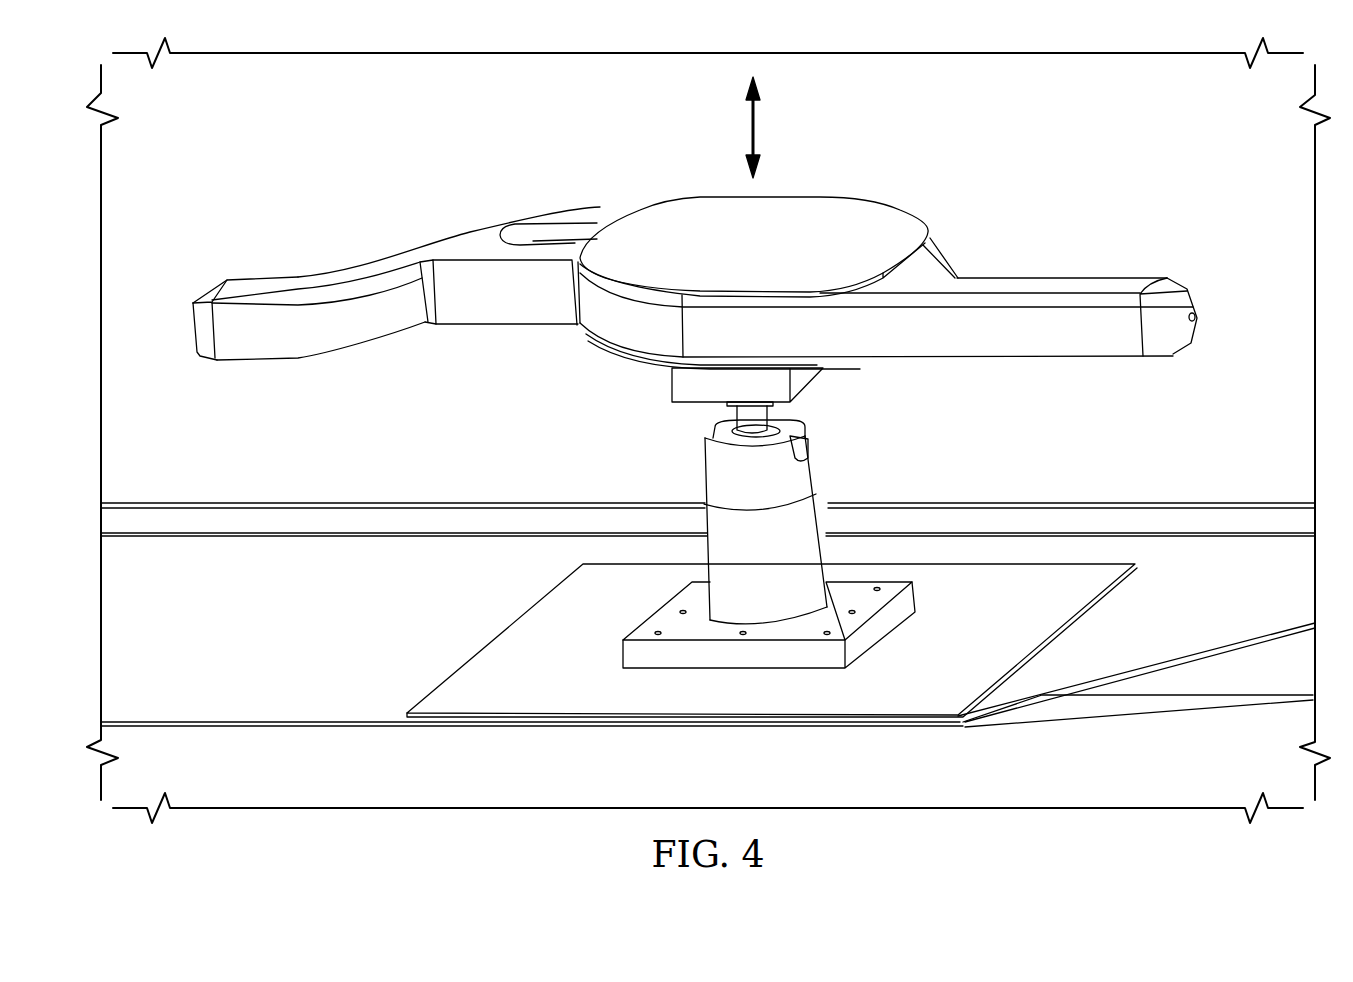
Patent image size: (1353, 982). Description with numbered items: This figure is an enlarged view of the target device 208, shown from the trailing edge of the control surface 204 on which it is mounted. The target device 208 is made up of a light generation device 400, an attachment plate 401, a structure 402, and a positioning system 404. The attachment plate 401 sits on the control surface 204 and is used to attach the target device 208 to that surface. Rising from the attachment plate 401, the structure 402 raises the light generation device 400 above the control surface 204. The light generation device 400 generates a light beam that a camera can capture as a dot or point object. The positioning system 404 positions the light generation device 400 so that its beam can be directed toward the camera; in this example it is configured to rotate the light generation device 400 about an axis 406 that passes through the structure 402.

The control surface 204 is at (233, 642).
The target device 208 is at (833, 478).
The light generation device 400 is at (1195, 317).
The attachment plate 401 is at (495, 640).
The structure 402 is at (700, 478).
The positioning system 404 is at (845, 190).
The axis 406 is at (748, 128).